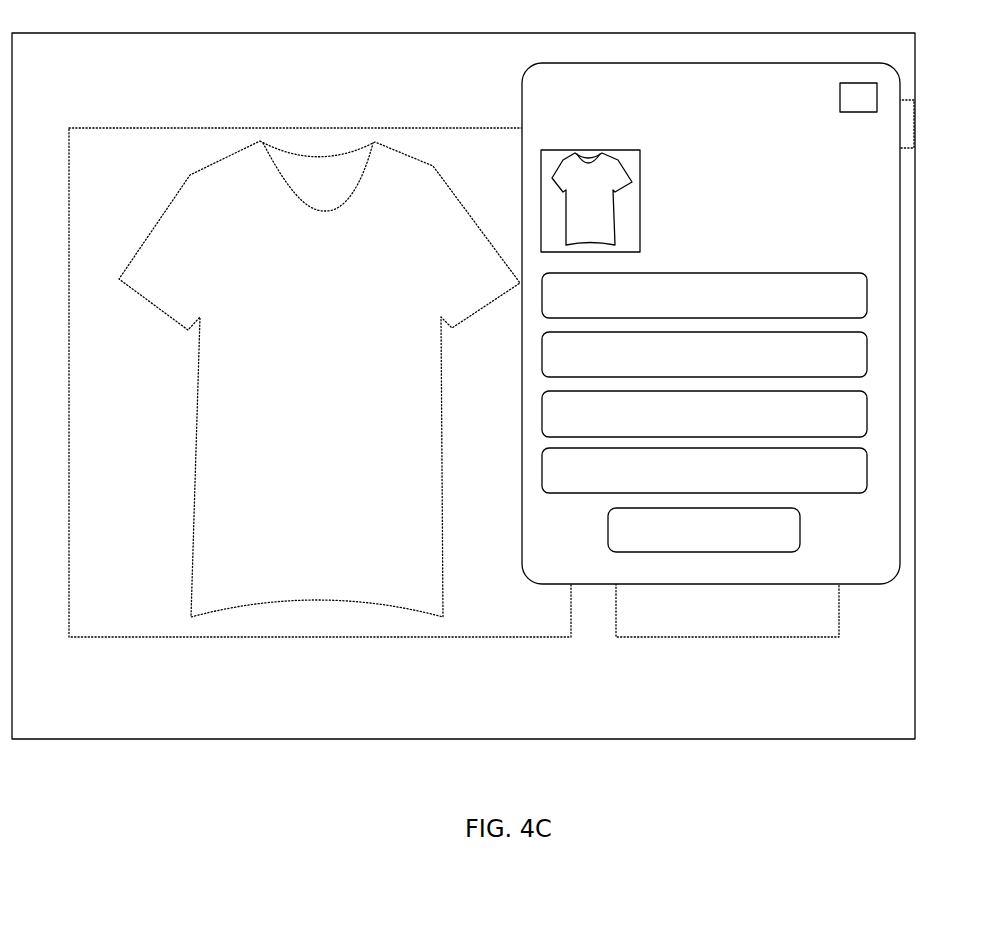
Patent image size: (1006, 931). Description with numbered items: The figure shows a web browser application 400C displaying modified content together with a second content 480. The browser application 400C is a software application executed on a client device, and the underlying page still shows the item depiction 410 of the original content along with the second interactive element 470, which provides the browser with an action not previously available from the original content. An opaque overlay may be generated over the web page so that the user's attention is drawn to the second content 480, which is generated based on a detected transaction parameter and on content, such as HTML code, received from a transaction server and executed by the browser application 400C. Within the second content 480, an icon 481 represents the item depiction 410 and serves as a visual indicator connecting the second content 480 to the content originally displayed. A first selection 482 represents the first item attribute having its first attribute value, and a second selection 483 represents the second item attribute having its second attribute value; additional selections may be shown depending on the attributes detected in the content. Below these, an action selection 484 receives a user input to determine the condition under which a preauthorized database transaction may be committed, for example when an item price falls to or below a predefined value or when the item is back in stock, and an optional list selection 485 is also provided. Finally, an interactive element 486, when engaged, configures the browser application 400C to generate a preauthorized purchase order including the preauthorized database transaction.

The web browser application 400C is at (503, 386).
The item depiction 410 is at (320, 349).
The second interactive element 470 is at (756, 602).
The second content 480 is at (670, 323).
The icon 481 is at (546, 201).
The first selection 482 is at (662, 315).
The second selection 483 is at (662, 376).
The action selection 484 is at (662, 434).
The list selection 485 is at (662, 495).
The interactive element 486 is at (668, 538).